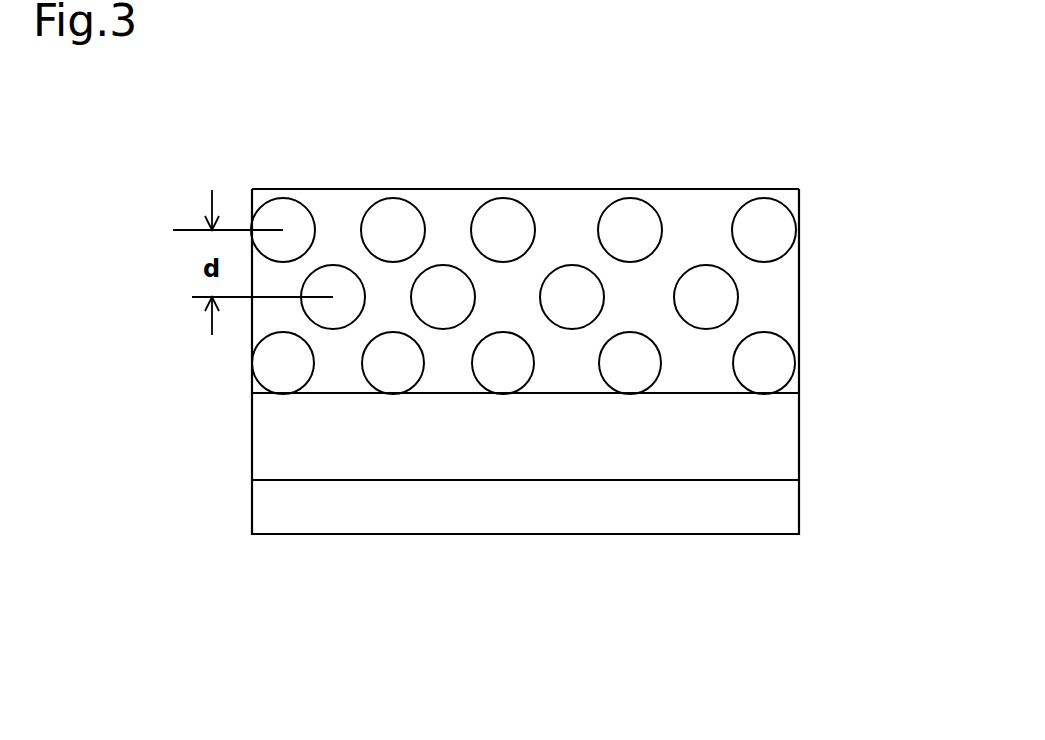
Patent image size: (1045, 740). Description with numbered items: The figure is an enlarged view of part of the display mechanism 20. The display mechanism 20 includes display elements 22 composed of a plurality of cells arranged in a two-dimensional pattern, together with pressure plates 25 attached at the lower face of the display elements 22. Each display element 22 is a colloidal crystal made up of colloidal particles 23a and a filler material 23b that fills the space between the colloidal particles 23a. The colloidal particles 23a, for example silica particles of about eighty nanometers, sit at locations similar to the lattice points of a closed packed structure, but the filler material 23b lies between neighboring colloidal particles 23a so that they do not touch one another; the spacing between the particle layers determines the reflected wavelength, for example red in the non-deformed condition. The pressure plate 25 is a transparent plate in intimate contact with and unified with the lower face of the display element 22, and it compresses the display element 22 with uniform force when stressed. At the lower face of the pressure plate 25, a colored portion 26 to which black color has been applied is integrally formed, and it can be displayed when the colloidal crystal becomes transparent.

The display mechanism 20 is at (702, 127).
The display element 22 is at (535, 189).
The colloidal particles 23a is at (787, 233).
The filler material 23b is at (787, 290).
The pressure plate 25 is at (252, 450).
The colored portion 26 is at (252, 500).